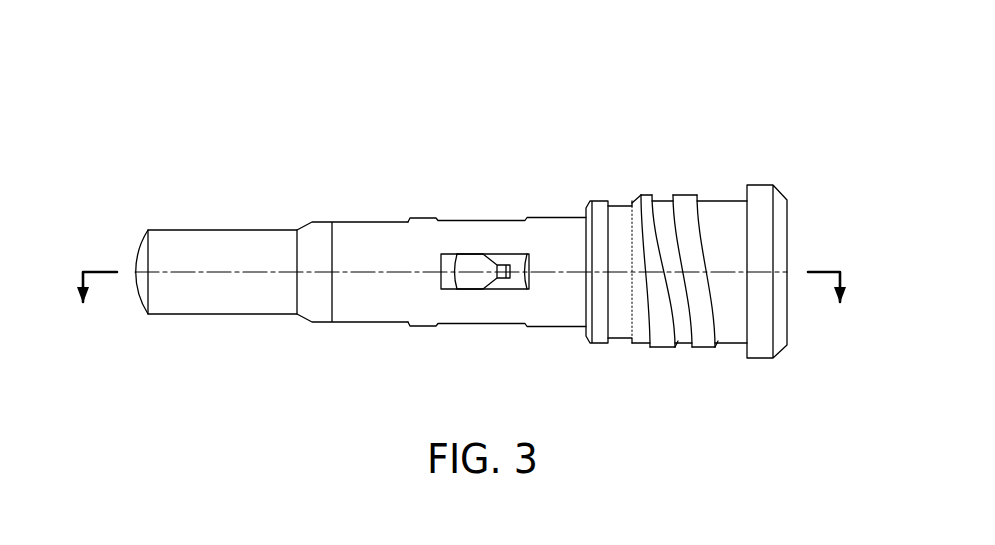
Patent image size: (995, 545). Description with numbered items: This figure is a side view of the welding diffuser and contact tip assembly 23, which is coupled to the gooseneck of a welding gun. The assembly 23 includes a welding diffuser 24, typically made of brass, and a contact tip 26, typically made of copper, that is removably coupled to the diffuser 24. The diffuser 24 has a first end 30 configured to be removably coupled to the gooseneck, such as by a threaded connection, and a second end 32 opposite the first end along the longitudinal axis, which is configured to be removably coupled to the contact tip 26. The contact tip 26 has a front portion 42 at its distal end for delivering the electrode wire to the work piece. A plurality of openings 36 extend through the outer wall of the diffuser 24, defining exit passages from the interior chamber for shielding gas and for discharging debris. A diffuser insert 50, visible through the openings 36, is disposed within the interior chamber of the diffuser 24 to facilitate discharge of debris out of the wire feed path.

The welding diffuser and contact tip assembly 23 is at (457, 221).
The front portion 42 is at (131, 214).
The contact tip 26 is at (245, 230).
The second end 32 is at (299, 330).
The welding diffuser 24 is at (555, 218).
The openings 36 is at (477, 210).
The diffuser insert 50 is at (470, 262).
The first end 30 is at (762, 162).